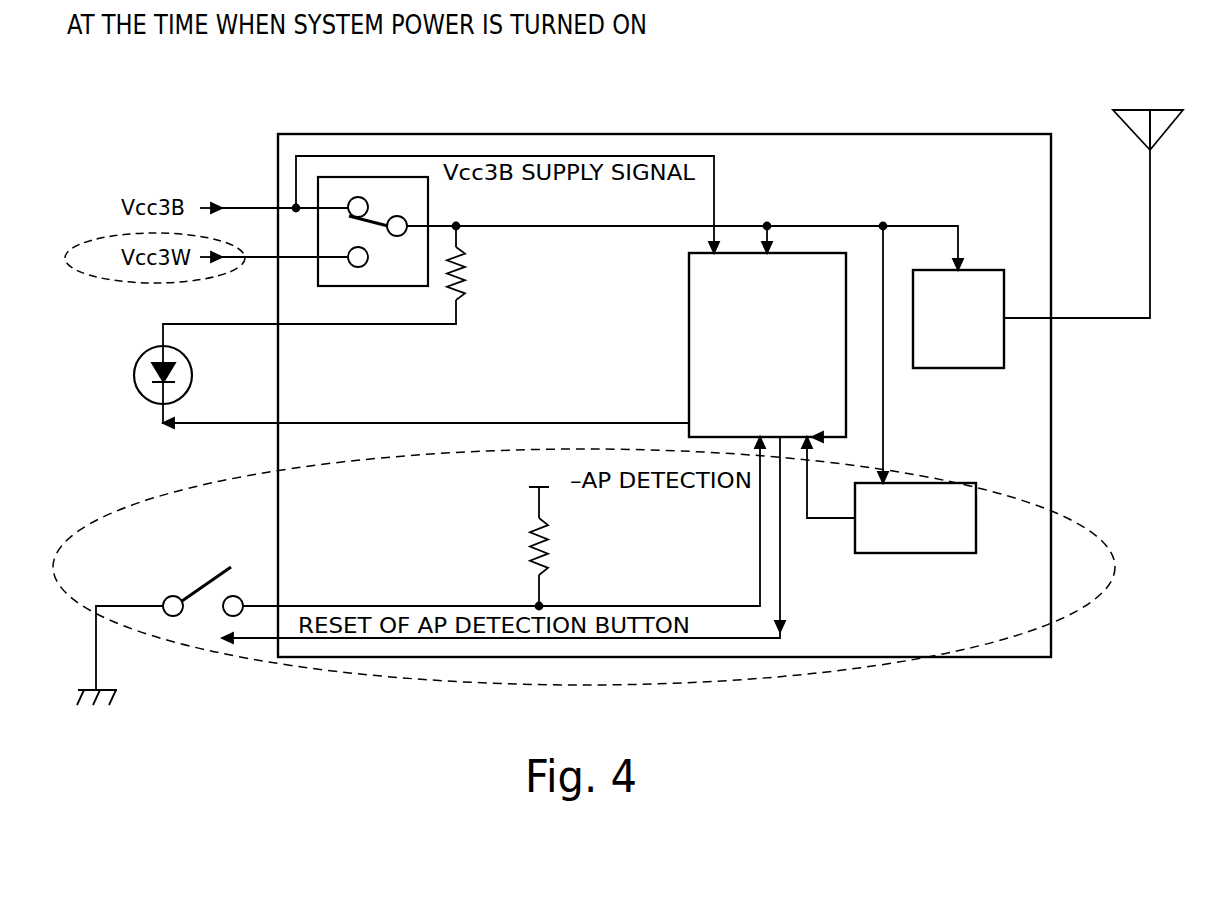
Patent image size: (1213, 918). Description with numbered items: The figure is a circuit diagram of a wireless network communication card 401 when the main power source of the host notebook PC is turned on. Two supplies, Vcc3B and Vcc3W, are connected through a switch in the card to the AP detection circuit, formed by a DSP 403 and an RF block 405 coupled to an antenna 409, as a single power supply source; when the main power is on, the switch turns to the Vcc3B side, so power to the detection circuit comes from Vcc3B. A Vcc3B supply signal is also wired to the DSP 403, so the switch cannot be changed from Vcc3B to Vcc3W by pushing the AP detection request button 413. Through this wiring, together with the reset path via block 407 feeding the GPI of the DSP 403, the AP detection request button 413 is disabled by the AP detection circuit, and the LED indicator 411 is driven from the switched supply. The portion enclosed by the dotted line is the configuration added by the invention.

The main circuit board / control unit 401 is at (818, 134).
The controller (CPU) with GPI 403 is at (689, 307).
The wireless communication module 405 is at (958, 370).
The AP detection circuit 407 is at (913, 555).
The antenna 409 is at (1158, 110).
The LED indicator 411 is at (133, 375).
The AP detection reset button 413 is at (196, 588).